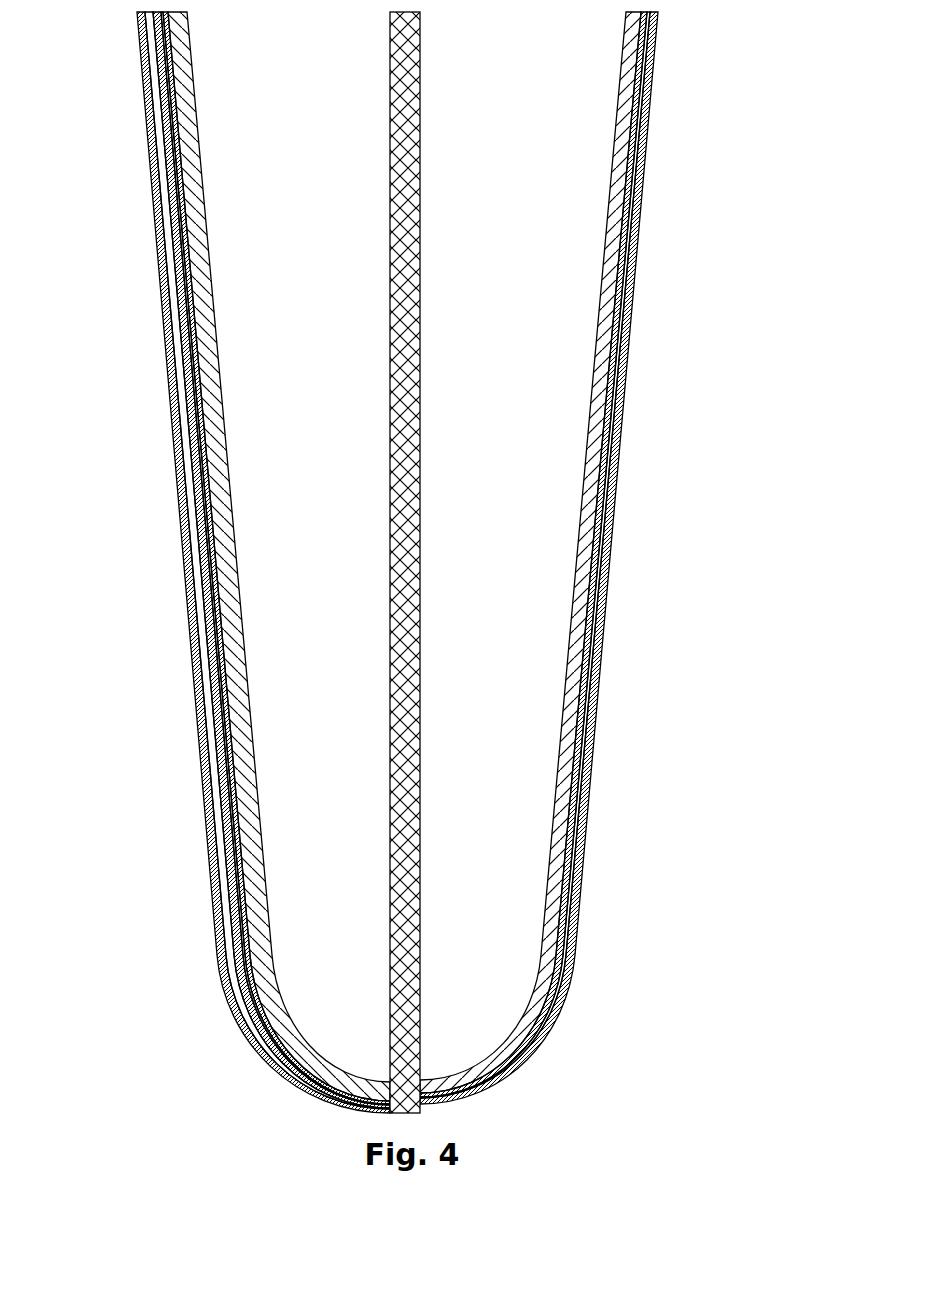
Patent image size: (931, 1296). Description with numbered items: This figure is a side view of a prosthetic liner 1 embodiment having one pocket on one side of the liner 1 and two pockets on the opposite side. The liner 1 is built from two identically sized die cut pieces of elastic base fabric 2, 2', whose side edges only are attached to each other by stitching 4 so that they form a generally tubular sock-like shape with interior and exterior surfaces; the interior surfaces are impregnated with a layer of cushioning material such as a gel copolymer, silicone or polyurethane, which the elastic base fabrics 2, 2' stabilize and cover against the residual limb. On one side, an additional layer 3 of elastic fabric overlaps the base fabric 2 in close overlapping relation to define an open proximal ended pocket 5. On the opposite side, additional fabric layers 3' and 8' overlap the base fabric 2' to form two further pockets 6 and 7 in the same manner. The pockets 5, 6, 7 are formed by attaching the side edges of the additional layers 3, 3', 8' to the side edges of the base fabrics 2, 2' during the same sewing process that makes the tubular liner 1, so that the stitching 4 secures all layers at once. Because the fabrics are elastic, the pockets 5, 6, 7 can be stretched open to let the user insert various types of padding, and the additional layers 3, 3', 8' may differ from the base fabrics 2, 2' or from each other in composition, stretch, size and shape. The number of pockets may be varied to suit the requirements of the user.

The first layer 1 is at (625, 145).
The elastic base fabric 2 is at (606, 554).
The additional layer of elastic fabric 3 is at (606, 558).
The stitching 4 is at (403, 673).
The pocket 5 is at (590, 688).
The pocket 6 is at (202, 463).
The pocket 7 is at (215, 762).
The elastic base fabric 2' is at (226, 558).
The additional layer of elastic fabric 3' is at (226, 560).
The additional fabric layer 8' is at (226, 562).